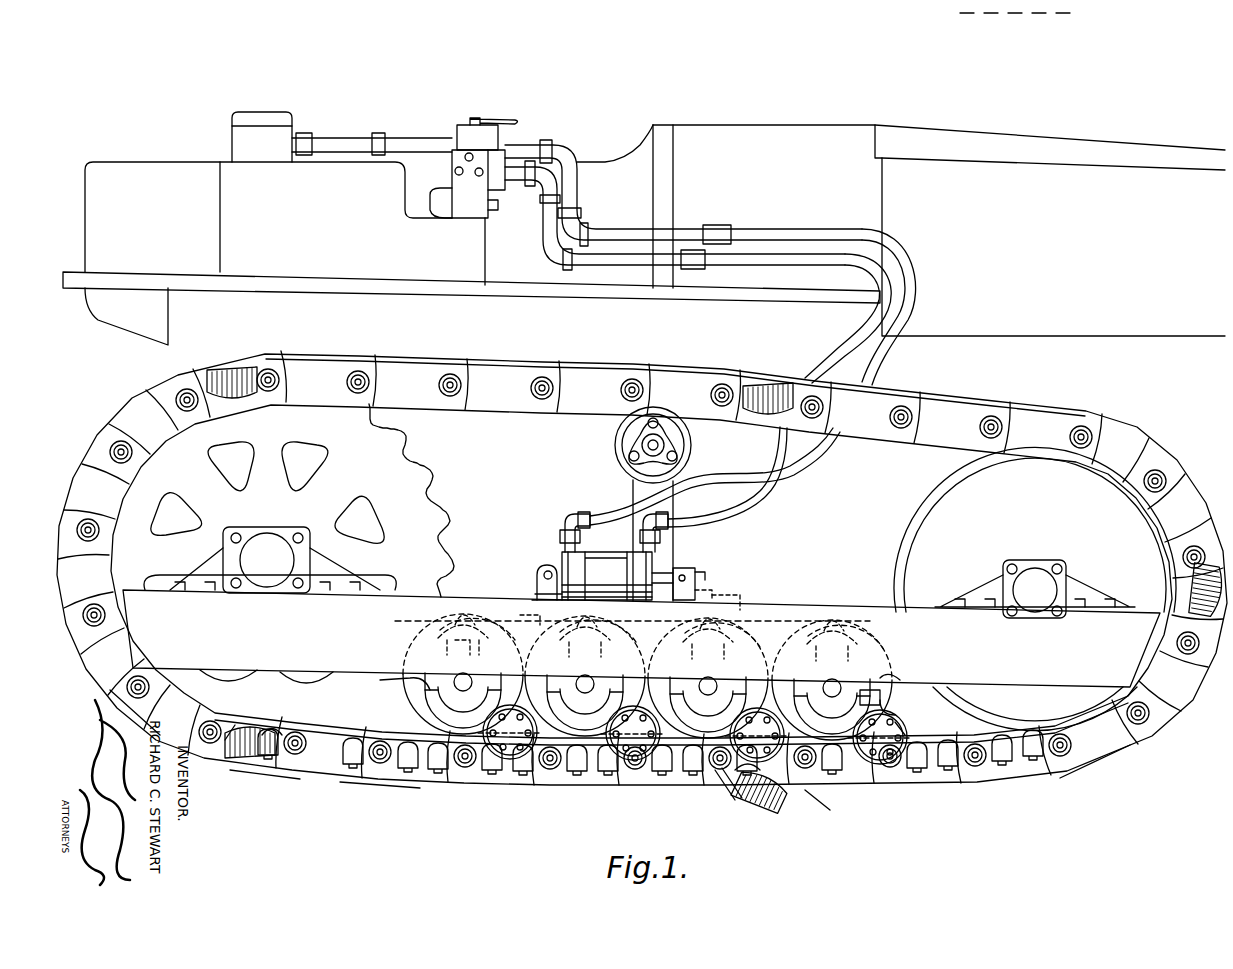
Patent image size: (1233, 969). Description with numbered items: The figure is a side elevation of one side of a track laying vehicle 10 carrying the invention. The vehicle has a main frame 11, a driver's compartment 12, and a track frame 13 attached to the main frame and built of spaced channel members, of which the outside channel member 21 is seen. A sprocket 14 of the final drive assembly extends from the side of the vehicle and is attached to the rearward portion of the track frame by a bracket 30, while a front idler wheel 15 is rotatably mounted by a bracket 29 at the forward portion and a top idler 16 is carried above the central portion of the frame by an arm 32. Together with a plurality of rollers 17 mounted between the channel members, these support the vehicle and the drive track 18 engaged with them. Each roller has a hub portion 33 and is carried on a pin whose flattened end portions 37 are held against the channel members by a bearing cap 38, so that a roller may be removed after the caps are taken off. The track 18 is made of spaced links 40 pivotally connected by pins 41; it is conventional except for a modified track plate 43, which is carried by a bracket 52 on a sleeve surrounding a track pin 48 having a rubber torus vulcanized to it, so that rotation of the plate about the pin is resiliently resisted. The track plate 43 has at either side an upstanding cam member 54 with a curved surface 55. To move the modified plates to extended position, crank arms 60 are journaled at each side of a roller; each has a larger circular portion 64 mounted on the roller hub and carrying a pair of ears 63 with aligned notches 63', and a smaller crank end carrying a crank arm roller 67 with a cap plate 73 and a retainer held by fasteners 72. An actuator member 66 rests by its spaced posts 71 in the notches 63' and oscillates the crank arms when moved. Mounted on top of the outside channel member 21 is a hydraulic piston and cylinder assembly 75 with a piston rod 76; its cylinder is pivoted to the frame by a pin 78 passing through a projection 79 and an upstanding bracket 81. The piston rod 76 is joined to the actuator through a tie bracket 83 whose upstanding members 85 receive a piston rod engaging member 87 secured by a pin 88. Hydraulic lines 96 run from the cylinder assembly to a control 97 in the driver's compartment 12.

The track laying vehicle 10 is at (120, 337).
The main frame 11 is at (200, 350).
The driver's compartment 12 is at (415, 204).
The track frame 13 is at (130, 660).
The sprocket 14 is at (430, 512).
The front idler wheel 15 is at (922, 548).
The top idler 16 is at (616, 444).
The rollers 17 is at (885, 700).
The drive track 18 is at (135, 402).
The channel member 21 is at (928, 608).
The bracket 29 is at (1070, 603).
The bracket 30 is at (641, 638).
The arm 32 is at (632, 486).
The hub portion 33 is at (760, 690).
The flattened end portions 37 is at (470, 678).
The bearing cap 38 is at (430, 660).
The links 40 is at (340, 768).
The pins 41 is at (305, 765).
The track plate 43 is at (232, 368).
The track pin 48 is at (275, 375).
The bracket 52 is at (718, 790).
The upstanding cam member 54 is at (240, 728).
The curved surface 55 is at (275, 730).
The crank arms 60 is at (420, 780).
The ears 63 is at (620, 611).
The notches 63' is at (643, 603).
The circular portion 64 is at (392, 685).
The actuator member 66 is at (775, 618).
The crank arm roller 67 is at (480, 780).
The posts 71 is at (470, 620).
The fasteners 72 is at (519, 611).
The cap plate 73 is at (905, 732).
The hydraulic piston and cylinder assembly 75 is at (607, 570).
The piston rod 76 is at (682, 567).
The pin 78 is at (540, 570).
The projection 79 is at (562, 555).
The upstanding bracket 81 is at (536, 590).
The tie bracket 83 is at (742, 612).
The upstanding members 85 is at (702, 590).
The piston rod engaging member 87 is at (690, 572).
The pin 88 is at (700, 574).
The hydraulic lines 96 is at (758, 258).
The control 97 is at (468, 128).